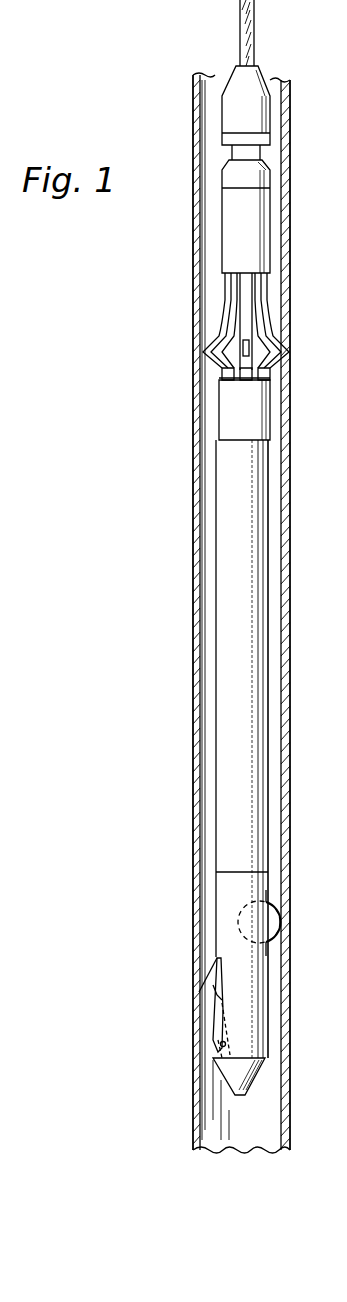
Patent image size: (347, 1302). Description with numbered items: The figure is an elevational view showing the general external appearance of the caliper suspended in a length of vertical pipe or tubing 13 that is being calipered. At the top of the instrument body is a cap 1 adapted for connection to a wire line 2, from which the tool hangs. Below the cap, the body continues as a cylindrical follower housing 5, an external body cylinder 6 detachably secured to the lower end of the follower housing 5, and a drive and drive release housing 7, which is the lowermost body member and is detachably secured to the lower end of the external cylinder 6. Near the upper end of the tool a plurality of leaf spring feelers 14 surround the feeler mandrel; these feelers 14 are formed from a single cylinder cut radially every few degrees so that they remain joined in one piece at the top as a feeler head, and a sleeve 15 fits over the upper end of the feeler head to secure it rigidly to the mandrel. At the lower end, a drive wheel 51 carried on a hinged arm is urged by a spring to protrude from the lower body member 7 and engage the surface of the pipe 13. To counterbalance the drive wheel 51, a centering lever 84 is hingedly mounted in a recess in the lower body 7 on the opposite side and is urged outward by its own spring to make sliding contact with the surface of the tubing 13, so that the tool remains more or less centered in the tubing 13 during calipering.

The cap 1 is at (266, 181).
The wire line 2 is at (253, 14).
The follower housing 5 is at (264, 414).
The external body cylinder 6 is at (264, 594).
The drive and drive release housing 7 is at (216, 892).
The pipe or tubing 13 is at (290, 262).
The leaf spring feelers 14 is at (268, 344).
The sleeve 15 is at (263, 222).
The drive wheel 51 is at (268, 907).
The centering lever 84 is at (205, 1003).